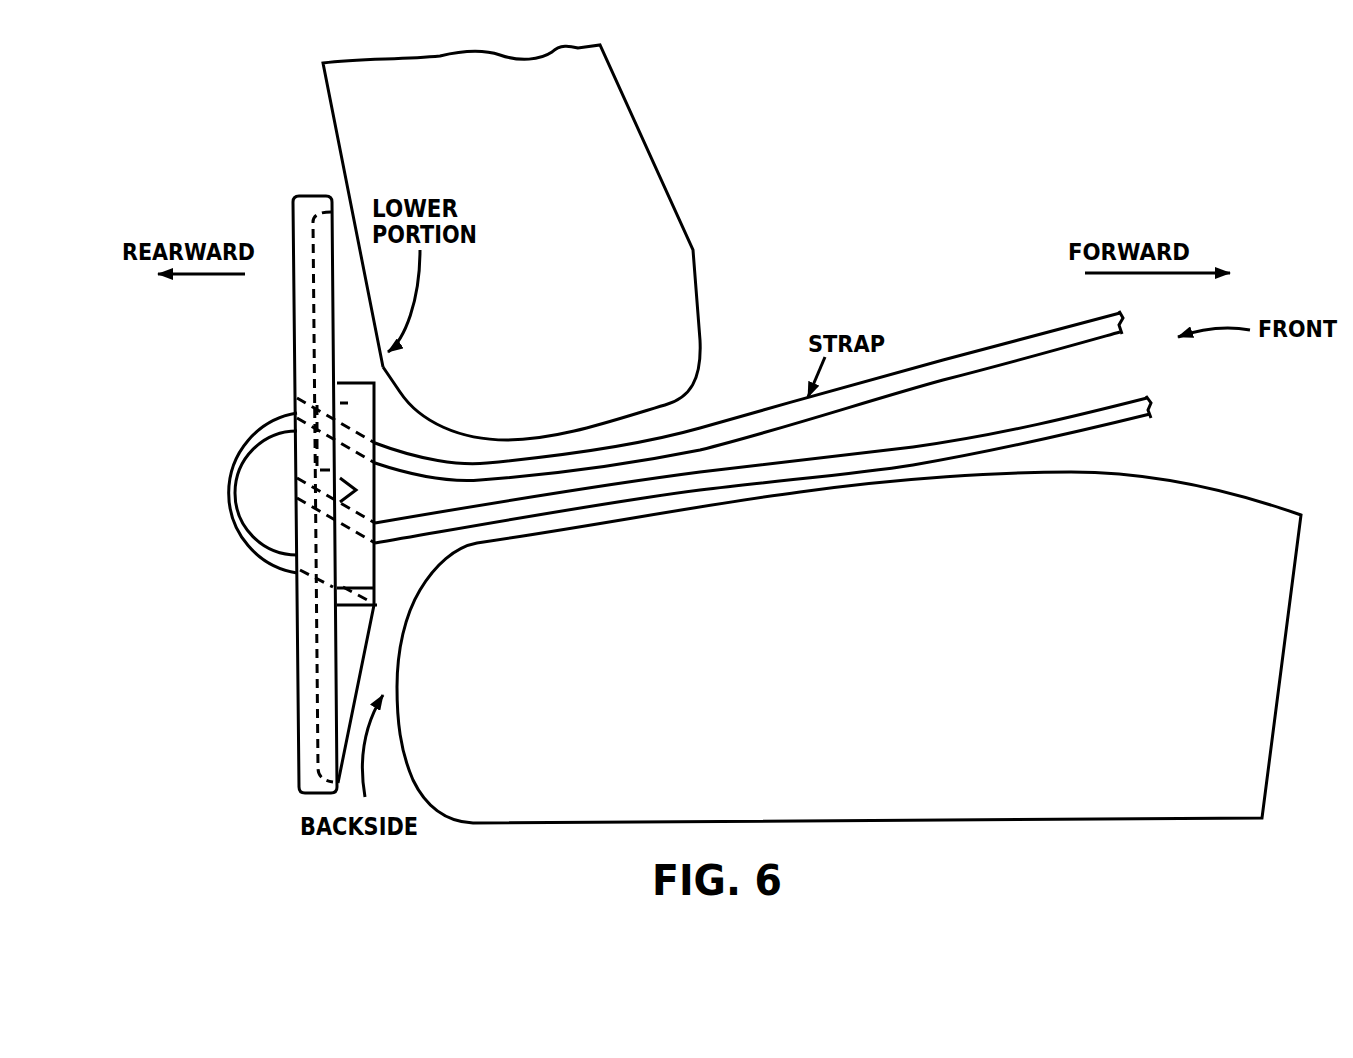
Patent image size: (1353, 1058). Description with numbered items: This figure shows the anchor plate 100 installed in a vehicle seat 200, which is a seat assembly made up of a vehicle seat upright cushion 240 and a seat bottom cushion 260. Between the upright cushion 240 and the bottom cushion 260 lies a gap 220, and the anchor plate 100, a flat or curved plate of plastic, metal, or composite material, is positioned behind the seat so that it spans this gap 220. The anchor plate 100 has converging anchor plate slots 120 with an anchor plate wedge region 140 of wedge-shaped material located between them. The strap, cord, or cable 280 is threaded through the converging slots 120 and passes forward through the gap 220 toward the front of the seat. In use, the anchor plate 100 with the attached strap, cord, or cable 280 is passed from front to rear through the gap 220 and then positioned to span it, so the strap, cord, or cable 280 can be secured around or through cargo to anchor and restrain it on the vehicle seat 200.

The anchor plate 100 is at (283, 202).
The converging anchor plate slots 120 is at (290, 407).
The anchor plate wedge region 140 is at (307, 497).
The vehicle seat 200 is at (923, 230).
The gap 220 is at (683, 408).
The vehicle seat upright cushion 240 is at (627, 98).
The seat bottom cushion 260 is at (1175, 476).
The strap, cord, or cable 280 is at (943, 357).